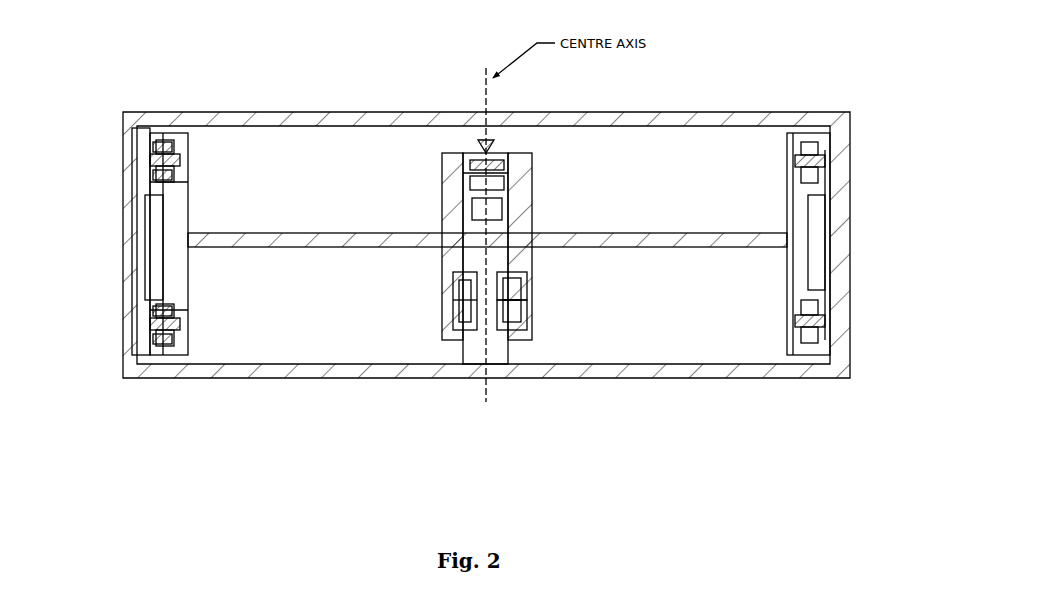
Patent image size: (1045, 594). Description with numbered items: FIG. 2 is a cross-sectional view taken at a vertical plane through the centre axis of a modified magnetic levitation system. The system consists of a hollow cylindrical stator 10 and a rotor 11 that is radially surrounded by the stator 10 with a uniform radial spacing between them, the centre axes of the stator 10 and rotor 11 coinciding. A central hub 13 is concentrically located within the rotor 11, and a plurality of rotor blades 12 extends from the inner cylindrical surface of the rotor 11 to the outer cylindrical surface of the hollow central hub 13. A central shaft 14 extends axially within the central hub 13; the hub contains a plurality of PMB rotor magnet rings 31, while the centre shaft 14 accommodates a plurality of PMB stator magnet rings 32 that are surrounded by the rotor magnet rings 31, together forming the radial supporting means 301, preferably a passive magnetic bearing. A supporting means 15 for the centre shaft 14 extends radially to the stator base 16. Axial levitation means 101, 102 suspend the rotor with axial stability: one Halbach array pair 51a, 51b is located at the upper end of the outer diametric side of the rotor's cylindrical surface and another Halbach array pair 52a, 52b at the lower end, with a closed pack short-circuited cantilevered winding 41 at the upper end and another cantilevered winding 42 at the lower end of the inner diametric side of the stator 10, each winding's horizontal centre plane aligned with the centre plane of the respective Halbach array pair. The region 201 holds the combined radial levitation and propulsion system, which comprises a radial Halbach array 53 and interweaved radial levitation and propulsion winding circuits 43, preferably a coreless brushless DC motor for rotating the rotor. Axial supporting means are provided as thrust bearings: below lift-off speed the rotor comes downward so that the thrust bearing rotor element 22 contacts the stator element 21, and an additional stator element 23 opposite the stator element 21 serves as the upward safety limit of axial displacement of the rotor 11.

The stator 10 is at (232, 112).
The rotor 11 is at (787, 185).
The rotor blades 12 is at (268, 232).
The central hub 13 is at (440, 312).
The central shaft 14 is at (500, 352).
The supporting means 15 is at (282, 377).
The stator base 16 is at (123, 370).
The thrust bearing stator element 21 is at (514, 188).
The thrust bearing rotor element 22 is at (494, 167).
The additional stator element 23 is at (496, 148).
The PMB rotor magnet rings 31 is at (519, 281).
The PMB stator magnet rings 32 is at (509, 313).
The cantilevered winding 41 is at (170, 162).
The cantilevered winding 42 is at (170, 326).
The interweaved radial levitation and propulsion winding circuits 43 is at (133, 233).
The halbach array 51a is at (137, 145).
The halbach array 51b is at (137, 183).
The halbach array 52a is at (137, 307).
The halbach array 52b is at (137, 346).
The radial halbach array 53 is at (168, 210).
The axial levitation means 101 is at (867, 142).
The axial levitation means 102 is at (867, 302).
The radial levitation means and propulsion system 201 is at (865, 197).
The radial supporting means 301 is at (528, 400).